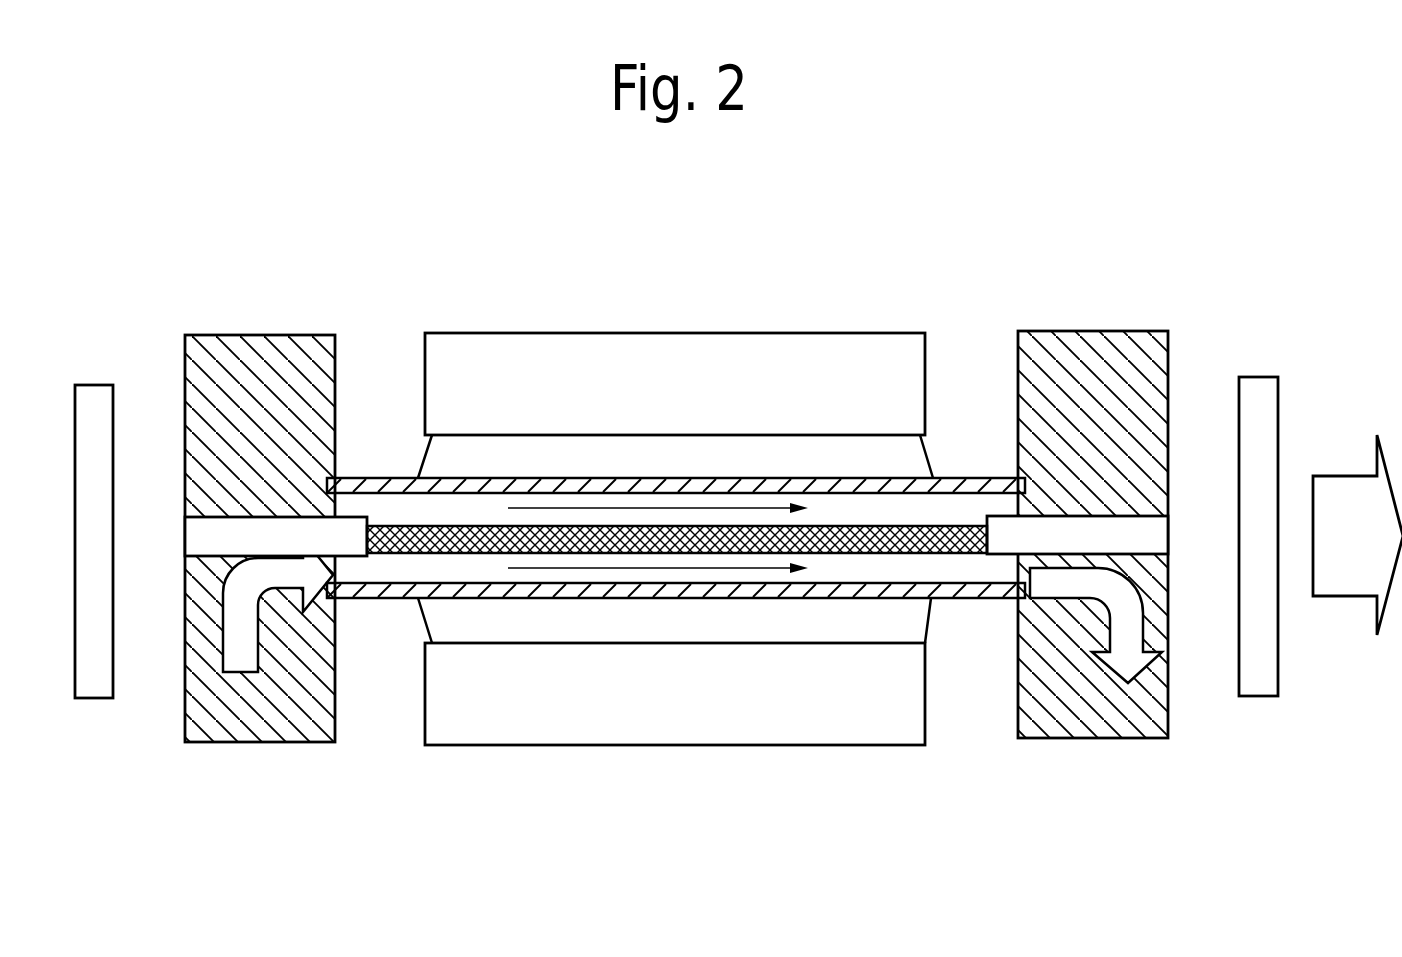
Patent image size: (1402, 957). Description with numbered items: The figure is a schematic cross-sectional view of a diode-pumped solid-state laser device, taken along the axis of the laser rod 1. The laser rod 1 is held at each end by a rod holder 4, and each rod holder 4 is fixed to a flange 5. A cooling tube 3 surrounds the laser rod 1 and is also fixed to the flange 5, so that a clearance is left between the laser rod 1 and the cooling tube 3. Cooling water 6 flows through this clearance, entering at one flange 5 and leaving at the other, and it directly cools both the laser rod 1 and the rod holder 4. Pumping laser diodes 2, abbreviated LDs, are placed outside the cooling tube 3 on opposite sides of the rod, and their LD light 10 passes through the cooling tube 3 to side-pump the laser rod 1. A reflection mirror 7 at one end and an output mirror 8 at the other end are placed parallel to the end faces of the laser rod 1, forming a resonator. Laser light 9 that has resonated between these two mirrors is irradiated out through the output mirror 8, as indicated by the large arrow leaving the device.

The laser rod 1 is at (383, 560).
The pumping laser diodes 2 is at (597, 348).
The cooling tube 3 is at (957, 476).
The rod holder 4 is at (238, 527).
The flange 5 is at (245, 723).
The cooling water 6 is at (897, 570).
The reflection mirror 7 is at (96, 685).
The output mirror 8 is at (1262, 684).
The laser light 9 is at (1350, 580).
The LD light 10 is at (535, 623).